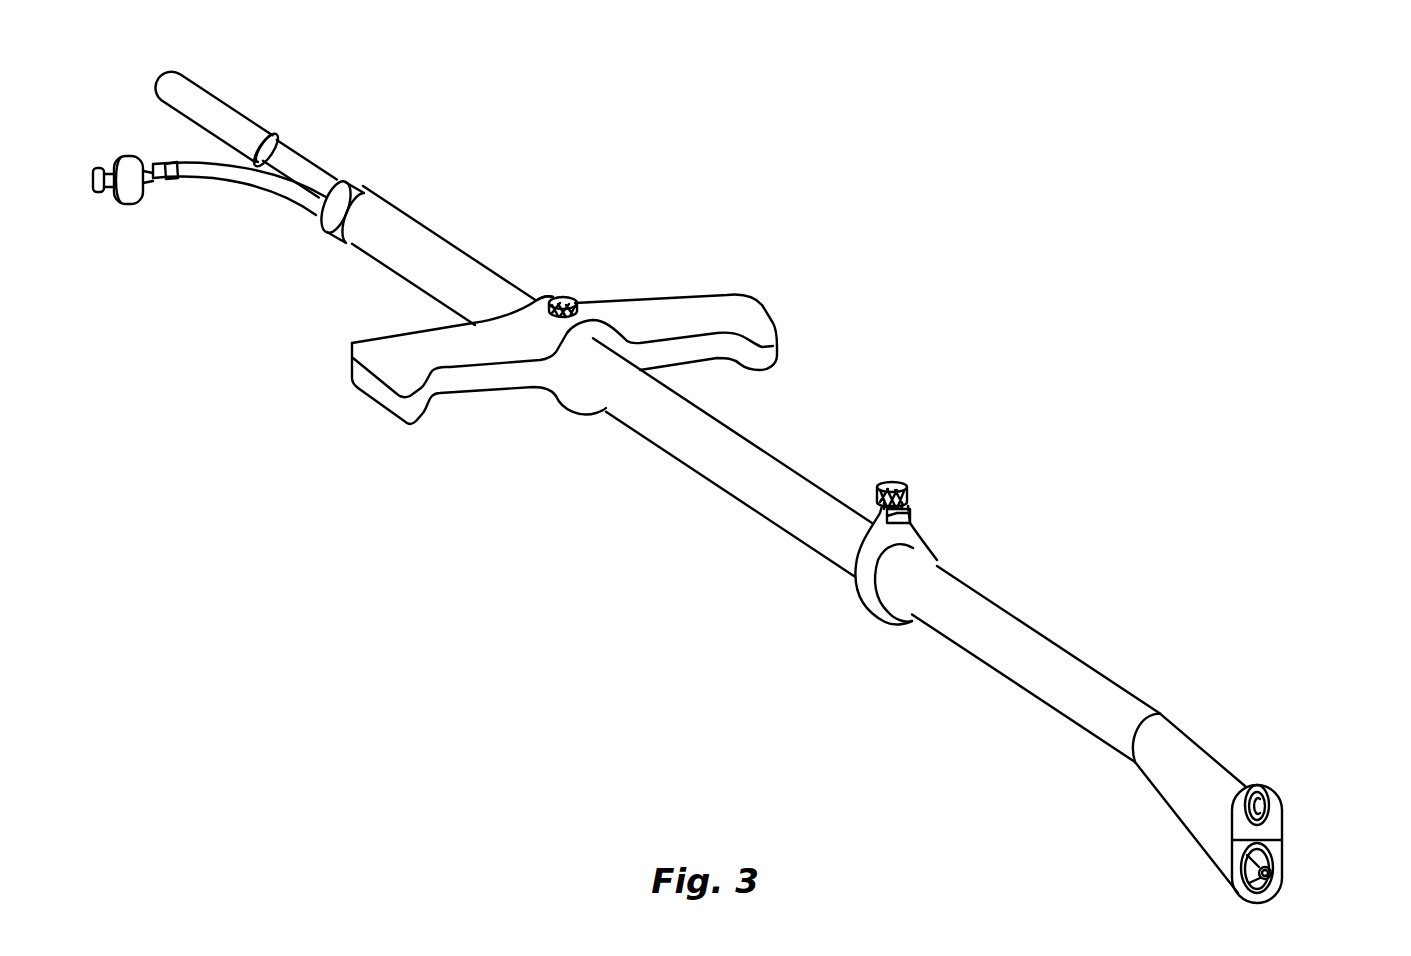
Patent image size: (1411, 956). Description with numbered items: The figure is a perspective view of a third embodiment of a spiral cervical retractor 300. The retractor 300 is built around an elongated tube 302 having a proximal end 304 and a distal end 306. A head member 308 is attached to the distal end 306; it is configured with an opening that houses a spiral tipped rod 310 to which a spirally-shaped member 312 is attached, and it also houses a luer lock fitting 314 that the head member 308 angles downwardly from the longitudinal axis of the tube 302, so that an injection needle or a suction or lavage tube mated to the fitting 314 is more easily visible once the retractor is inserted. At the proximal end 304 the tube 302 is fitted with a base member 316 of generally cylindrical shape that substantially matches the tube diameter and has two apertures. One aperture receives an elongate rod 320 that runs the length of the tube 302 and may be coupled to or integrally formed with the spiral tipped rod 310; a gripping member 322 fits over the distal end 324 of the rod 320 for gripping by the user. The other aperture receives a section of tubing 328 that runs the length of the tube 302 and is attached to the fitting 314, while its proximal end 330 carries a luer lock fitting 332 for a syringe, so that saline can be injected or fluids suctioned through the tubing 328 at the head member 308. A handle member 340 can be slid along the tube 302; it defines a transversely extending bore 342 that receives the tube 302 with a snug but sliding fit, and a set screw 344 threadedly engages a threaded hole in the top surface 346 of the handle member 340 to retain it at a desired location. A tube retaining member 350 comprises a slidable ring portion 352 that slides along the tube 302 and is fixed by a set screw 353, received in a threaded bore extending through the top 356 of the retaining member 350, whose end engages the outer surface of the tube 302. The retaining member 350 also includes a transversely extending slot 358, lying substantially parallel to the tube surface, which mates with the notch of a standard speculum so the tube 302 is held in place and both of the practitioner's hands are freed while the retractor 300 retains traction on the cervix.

The spiral cervical retractor 300 is at (625, 526).
The elongated tube 302 is at (757, 447).
The proximal end 304 is at (368, 188).
The distal end 306 is at (1167, 713).
The head member 308 is at (1185, 833).
The spiral tipped rod 310 is at (1268, 802).
The spirally-shaped member 312 is at (1268, 822).
The luer lock fitting 314 is at (1280, 862).
The base member 316 is at (335, 233).
The elongate rod 320 is at (312, 160).
The gripping member 322 is at (210, 90).
The distal end of the rod 324 is at (277, 140).
The tubing 328 is at (222, 182).
The proximal end 330 is at (188, 157).
The luer lock fitting 332 is at (127, 203).
The handle member 340 is at (760, 307).
The transversely extending bore 342 is at (560, 378).
The set screw 344 is at (578, 305).
The top surface 346 is at (543, 298).
The tube retaining member 350 is at (855, 585).
The slidable ring portion 352 is at (937, 558).
The set screw 353 is at (903, 482).
The top 356 is at (908, 503).
The transversely extending slot 358 is at (912, 520).